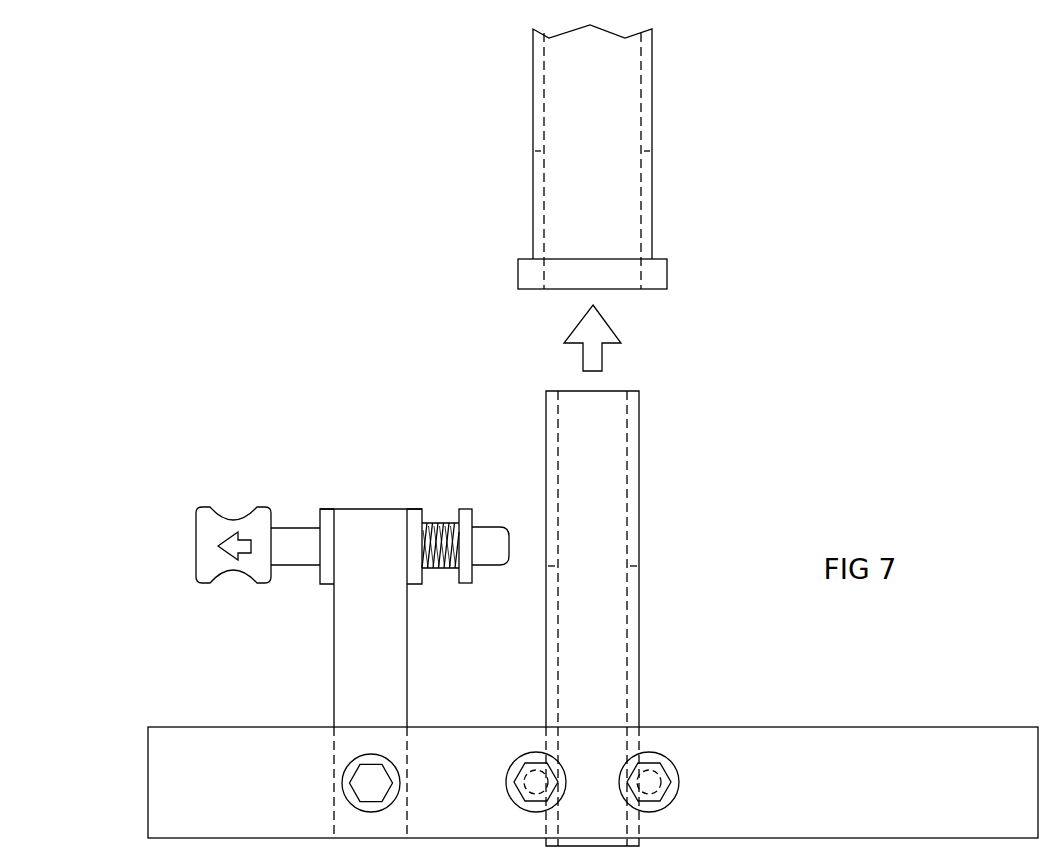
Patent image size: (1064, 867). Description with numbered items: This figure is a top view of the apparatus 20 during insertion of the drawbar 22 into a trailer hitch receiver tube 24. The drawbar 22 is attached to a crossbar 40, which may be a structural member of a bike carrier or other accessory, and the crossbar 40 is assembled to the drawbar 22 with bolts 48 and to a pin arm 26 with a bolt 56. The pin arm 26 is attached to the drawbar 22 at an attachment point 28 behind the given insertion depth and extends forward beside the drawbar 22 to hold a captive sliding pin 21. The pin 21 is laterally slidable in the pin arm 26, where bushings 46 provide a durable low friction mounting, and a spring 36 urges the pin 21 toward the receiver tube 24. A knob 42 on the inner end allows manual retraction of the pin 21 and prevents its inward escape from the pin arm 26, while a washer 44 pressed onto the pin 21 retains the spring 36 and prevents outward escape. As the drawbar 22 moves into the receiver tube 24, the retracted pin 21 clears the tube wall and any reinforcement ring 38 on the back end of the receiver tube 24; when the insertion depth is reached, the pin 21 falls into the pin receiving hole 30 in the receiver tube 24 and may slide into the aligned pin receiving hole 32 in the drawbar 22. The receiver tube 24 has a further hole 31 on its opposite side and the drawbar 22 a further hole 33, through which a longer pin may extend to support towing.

The apparatus 20 is at (198, 641).
The captive sliding pin 21 is at (288, 530).
The drawbar 22 is at (579, 606).
The trailer hitch receiver tube 24 is at (579, 188).
The pin arm 26 is at (358, 633).
The attachment point 28 is at (537, 720).
The pin receiving hole 30 is at (540, 108).
The pin receiving hole 31 is at (641, 108).
The pin receiving hole 32 is at (553, 527).
The pin receiving hole 33 is at (632, 527).
The spring 36 is at (440, 523).
The reinforcement ring 38 is at (522, 259).
The crossbar 40 is at (234, 793).
The knob 42 is at (240, 520).
The washer 44 is at (472, 575).
The bushings 46 is at (327, 512).
The bolts 48 is at (517, 770).
The bolt 56 is at (380, 790).